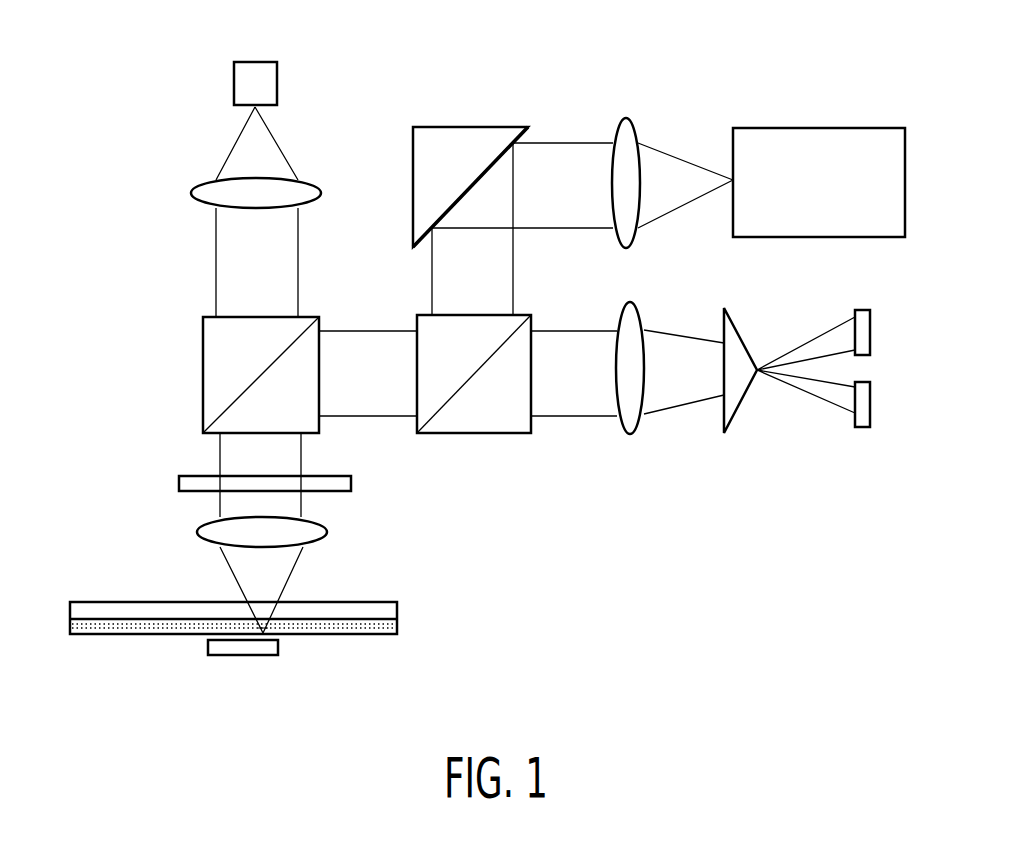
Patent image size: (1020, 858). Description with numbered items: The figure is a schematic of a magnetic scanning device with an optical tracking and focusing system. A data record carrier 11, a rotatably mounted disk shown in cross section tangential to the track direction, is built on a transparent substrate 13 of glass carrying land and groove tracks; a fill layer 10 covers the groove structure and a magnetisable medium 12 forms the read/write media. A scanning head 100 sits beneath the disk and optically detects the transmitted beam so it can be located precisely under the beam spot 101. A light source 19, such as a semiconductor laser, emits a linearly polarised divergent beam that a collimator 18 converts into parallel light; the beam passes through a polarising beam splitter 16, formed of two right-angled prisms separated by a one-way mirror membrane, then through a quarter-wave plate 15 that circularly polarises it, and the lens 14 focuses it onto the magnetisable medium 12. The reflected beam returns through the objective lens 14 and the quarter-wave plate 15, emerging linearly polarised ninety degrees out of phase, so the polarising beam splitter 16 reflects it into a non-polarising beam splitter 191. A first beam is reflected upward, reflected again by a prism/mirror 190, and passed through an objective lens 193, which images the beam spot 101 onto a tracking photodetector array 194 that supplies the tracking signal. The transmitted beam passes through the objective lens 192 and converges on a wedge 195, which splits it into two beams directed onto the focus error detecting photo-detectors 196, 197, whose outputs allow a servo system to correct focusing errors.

The fill layer 10 is at (725, 616).
The data record carrier 11 is at (412, 613).
The magnetisable medium 12 is at (397, 637).
The transparent substrate 13 is at (272, 623).
The objective lens 14 is at (333, 531).
The quarter-wave plate 15 is at (365, 482).
The polarising beam splitter 16 is at (200, 358).
The collimator 18 is at (310, 177).
The light source 19 is at (287, 56).
The scanning head 100 is at (221, 659).
The beam spot 101 is at (282, 636).
The prism/mirror 190 is at (472, 119).
The non-polarising beam splitter 191 is at (484, 440).
The objective lens 192 is at (634, 443).
The objective lens 193 is at (633, 101).
The tracking photodetector array 194 is at (823, 123).
The wedge 195 is at (744, 406).
The focus error detecting photo-detector 196 is at (878, 327).
The focus error detecting photo-detector 197 is at (879, 406).